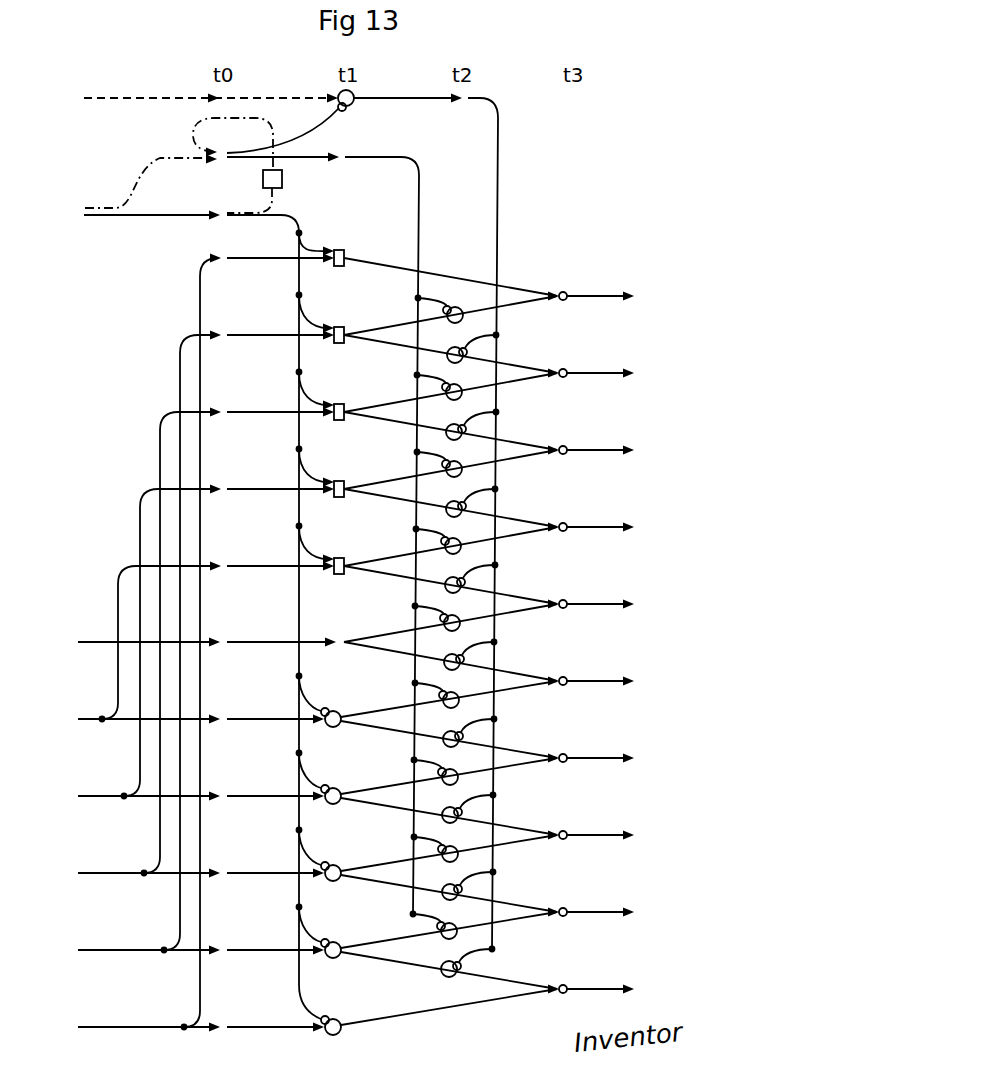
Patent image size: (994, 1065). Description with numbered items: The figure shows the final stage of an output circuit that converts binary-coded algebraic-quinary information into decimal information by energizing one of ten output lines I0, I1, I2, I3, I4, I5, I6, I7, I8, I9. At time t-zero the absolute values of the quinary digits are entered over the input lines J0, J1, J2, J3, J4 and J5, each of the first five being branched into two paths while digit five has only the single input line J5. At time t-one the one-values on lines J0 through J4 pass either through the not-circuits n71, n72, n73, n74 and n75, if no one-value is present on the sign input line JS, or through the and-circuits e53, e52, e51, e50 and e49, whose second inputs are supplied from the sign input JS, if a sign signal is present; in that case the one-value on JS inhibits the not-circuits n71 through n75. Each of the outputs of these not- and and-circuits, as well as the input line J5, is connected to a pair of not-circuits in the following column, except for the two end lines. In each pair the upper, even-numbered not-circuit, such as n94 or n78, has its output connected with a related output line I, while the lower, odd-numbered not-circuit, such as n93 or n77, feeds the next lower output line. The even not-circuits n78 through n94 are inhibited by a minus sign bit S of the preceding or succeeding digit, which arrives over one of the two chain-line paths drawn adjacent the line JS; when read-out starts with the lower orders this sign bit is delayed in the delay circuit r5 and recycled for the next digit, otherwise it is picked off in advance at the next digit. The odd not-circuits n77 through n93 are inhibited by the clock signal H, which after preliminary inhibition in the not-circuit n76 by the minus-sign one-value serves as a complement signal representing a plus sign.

The not-circuit n76 is at (344, 121).
The delay circuit r5 is at (248, 165).
The and-circuit e53 is at (428, 264).
The and-circuit e52 is at (428, 334).
The and-circuit e51 is at (428, 411).
The and-circuit e50 is at (428, 488).
The and-circuit e49 is at (428, 565).
The not-circuit n75 is at (428, 717).
The not-circuit n74 is at (428, 794).
The not-circuit n73 is at (428, 871).
The not-circuit n72 is at (428, 948).
The not-circuit n71 is at (438, 1018).
The even not-circuit n94 is at (440, 317).
The odd not-circuit n93 is at (473, 355).
The even not-circuit n78 is at (435, 933).
The odd not-circuit n77 is at (466, 971).
The clock signal H is at (197, 98).
The sign input line JS is at (183, 587).
The sign signal S is at (333, 535).
The input line J0 is at (189, 636).
The input line J1 is at (189, 636).
The input line J2 is at (189, 636).
The input line J3 is at (189, 636).
The input line J4 is at (189, 636).
The input line J5 is at (300, 642).
The output line I0 is at (607, 989).
The output line I1 is at (607, 912).
The output line I2 is at (607, 835).
The output line I3 is at (607, 758).
The output line I4 is at (607, 681).
The output line I5 is at (607, 604).
The output line I6 is at (607, 527).
The output line I7 is at (607, 450).
The output line I8 is at (607, 373).
The output line I9 is at (607, 296).